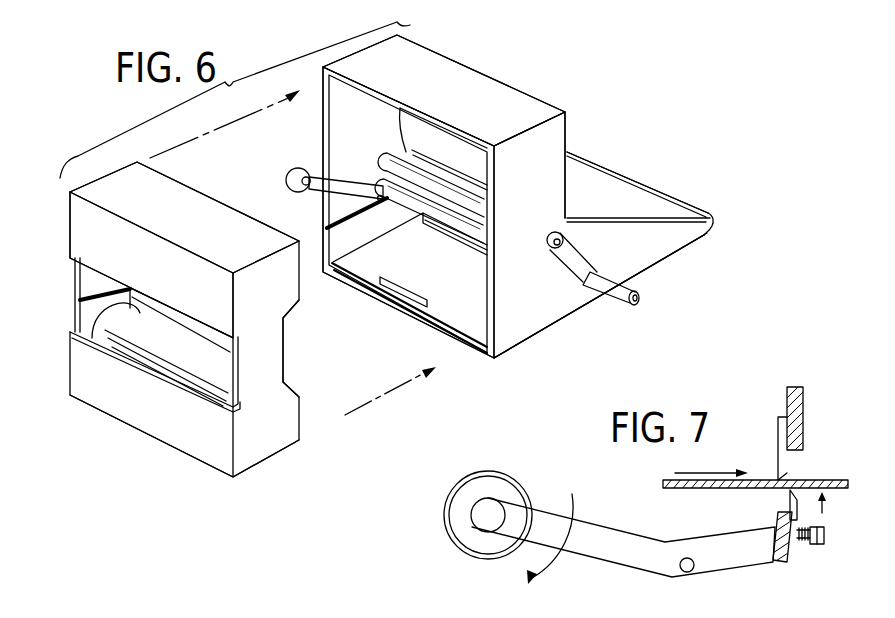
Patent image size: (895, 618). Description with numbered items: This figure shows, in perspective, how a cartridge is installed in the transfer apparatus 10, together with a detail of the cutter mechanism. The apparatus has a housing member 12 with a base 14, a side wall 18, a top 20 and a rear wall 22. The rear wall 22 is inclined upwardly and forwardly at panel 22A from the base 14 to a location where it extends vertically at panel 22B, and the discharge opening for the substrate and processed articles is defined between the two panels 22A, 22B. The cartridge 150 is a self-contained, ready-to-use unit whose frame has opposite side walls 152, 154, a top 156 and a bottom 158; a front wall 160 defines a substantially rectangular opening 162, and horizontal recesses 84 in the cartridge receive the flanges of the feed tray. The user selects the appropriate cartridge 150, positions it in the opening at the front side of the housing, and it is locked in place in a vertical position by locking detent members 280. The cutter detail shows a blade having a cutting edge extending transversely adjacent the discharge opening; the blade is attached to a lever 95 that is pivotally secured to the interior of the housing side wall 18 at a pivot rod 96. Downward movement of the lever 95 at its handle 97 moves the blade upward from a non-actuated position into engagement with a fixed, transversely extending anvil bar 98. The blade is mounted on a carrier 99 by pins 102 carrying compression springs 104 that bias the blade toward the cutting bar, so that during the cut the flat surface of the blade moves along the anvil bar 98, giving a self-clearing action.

In FIG. 6, the transfer apparatus 10 is at (540, 83).
In FIG. 6, the housing member 12 is at (567, 128).
In FIG. 6, the base 14 is at (560, 320).
In FIG. 6, the side wall 18 is at (541, 201).
In FIG. 6, the top 20 is at (442, 68).
In FIG. 6, the rear wall 22 is at (623, 190).
In FIG. 6, the inclined panel 22A is at (685, 207).
In FIG. 6, the vertical panel 22B is at (568, 150).
In FIG. 6, the horizontal recesses 84 is at (82, 303).
In FIG. 6, the lever 95 is at (333, 180).
In FIG. 7, the lever 95 is at (608, 538).
In FIG. 7, the pivot rod 96 is at (683, 572).
In FIG. 7, the handle 97 is at (500, 484).
In FIG. 7, the anvil bar 98 is at (788, 458).
In FIG. 7, the carrier 99 is at (780, 560).
In FIG. 7, the pins 102 is at (820, 527).
In FIG. 7, the compression springs 104 is at (803, 547).
In FIG. 6, the cartridge 150 is at (143, 443).
In FIG. 6, the side wall 152 is at (80, 182).
In FIG. 6, the side wall 154 is at (303, 396).
In FIG. 6, the top 156 is at (222, 217).
In FIG. 6, the bottom 158 is at (257, 463).
In FIG. 6, the front wall 160 is at (70, 230).
In FIG. 6, the rectangular opening 162 is at (80, 320).
In FIG. 6, the locking detent members 280 is at (408, 290).